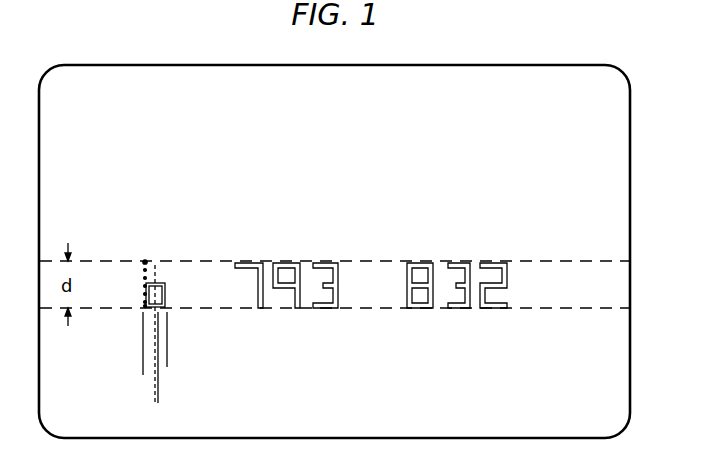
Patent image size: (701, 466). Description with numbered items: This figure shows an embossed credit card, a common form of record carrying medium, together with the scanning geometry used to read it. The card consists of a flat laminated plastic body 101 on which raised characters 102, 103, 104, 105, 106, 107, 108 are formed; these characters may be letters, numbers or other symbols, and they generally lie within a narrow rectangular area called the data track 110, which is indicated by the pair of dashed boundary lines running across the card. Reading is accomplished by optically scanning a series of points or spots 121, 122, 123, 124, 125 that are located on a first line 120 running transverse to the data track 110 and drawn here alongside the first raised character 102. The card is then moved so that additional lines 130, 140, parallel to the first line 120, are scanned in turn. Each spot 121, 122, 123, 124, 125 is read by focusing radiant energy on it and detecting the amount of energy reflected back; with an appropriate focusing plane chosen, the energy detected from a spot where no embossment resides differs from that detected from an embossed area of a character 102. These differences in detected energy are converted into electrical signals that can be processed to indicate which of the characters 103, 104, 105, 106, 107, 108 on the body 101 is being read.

The flat laminated plastic body 101 is at (610, 415).
The raised character 102 is at (166, 297).
The raised character 103 is at (240, 264).
The raised character 104 is at (285, 264).
The raised character 105 is at (325, 264).
The raised character 106 is at (413, 264).
The raised character 107 is at (455, 264).
The raised character 108 is at (492, 264).
The data track 110 is at (570, 261).
The first line 120 is at (143, 365).
The spot 121 is at (146, 305).
The spot 122 is at (144, 296).
The spot 123 is at (144, 284).
The spot 124 is at (146, 280).
The spot 125 is at (145, 261).
The additional line 130 is at (155, 392).
The additional line 140 is at (167, 357).